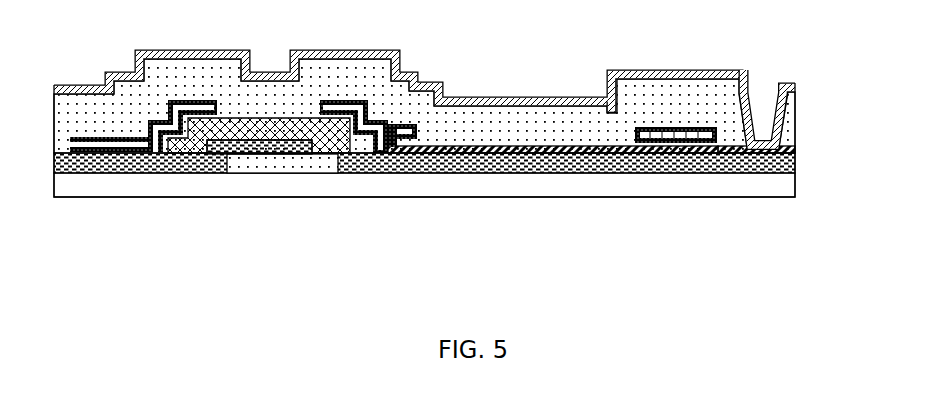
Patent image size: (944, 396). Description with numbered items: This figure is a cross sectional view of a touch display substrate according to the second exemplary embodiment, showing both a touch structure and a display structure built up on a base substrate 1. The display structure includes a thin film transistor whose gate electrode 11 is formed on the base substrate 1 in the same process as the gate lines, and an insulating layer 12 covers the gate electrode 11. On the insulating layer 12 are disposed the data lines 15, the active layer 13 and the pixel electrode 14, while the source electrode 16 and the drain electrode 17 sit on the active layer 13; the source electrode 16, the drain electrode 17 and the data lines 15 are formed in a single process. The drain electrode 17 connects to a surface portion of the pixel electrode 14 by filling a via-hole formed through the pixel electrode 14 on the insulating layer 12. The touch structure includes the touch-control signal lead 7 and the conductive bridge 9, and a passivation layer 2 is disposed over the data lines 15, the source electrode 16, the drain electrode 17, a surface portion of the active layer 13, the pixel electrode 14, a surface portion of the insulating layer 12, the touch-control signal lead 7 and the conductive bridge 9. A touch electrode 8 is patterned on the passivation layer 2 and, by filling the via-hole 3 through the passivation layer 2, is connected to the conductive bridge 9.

The base substrate 1 is at (780, 187).
The passivation layer 2 is at (672, 90).
The via-hole 3 is at (763, 127).
The touch-control signal lead 7 is at (673, 137).
The touch electrode 8 is at (612, 113).
The conductive bridge 9 is at (738, 148).
The gate electrode 11 is at (273, 167).
The insulating layer 12 is at (780, 163).
The active layer 13 is at (337, 127).
The pixel electrode 14 is at (469, 150).
The data lines 15 is at (86, 148).
The source electrode 16 is at (185, 112).
The drain electrode 17 is at (380, 140).